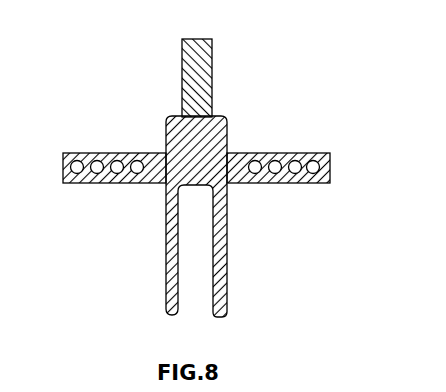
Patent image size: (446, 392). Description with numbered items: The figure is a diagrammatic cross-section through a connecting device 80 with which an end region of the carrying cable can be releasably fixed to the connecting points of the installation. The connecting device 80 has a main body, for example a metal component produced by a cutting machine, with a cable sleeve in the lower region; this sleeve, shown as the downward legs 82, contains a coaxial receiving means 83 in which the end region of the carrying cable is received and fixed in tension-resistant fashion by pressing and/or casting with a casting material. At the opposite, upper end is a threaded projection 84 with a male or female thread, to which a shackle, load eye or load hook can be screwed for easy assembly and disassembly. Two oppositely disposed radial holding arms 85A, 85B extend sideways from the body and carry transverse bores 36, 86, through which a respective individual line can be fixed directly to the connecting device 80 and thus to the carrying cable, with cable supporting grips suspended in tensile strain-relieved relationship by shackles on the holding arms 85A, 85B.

The connecting device 80 is at (204, 174).
The legs 82 is at (241, 200).
The coaxial receiving means 83 is at (198, 294).
The threaded projection 84 is at (167, 40).
The radial holding arm 85A is at (109, 178).
The radial holding arm 85B is at (291, 175).
The apertures 36 is at (117, 162).
The transverse bores 86 is at (296, 162).